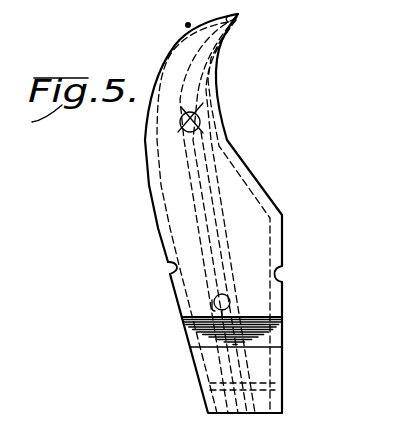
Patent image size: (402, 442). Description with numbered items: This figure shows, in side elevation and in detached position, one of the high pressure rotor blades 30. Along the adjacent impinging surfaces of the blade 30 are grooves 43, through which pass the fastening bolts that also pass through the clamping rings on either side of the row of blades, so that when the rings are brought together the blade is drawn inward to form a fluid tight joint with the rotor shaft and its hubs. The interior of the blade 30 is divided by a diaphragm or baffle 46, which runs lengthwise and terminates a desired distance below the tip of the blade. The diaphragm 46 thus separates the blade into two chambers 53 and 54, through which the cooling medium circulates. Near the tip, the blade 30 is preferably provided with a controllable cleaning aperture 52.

The high pressure rotor blade 30 is at (158, 207).
The grooves 43 is at (173, 272).
The diaphragm or baffle 46 is at (206, 214).
The controllable cleaning aperture 52 is at (228, 22).
The chamber 53 is at (272, 231).
The chamber 54 is at (167, 225).